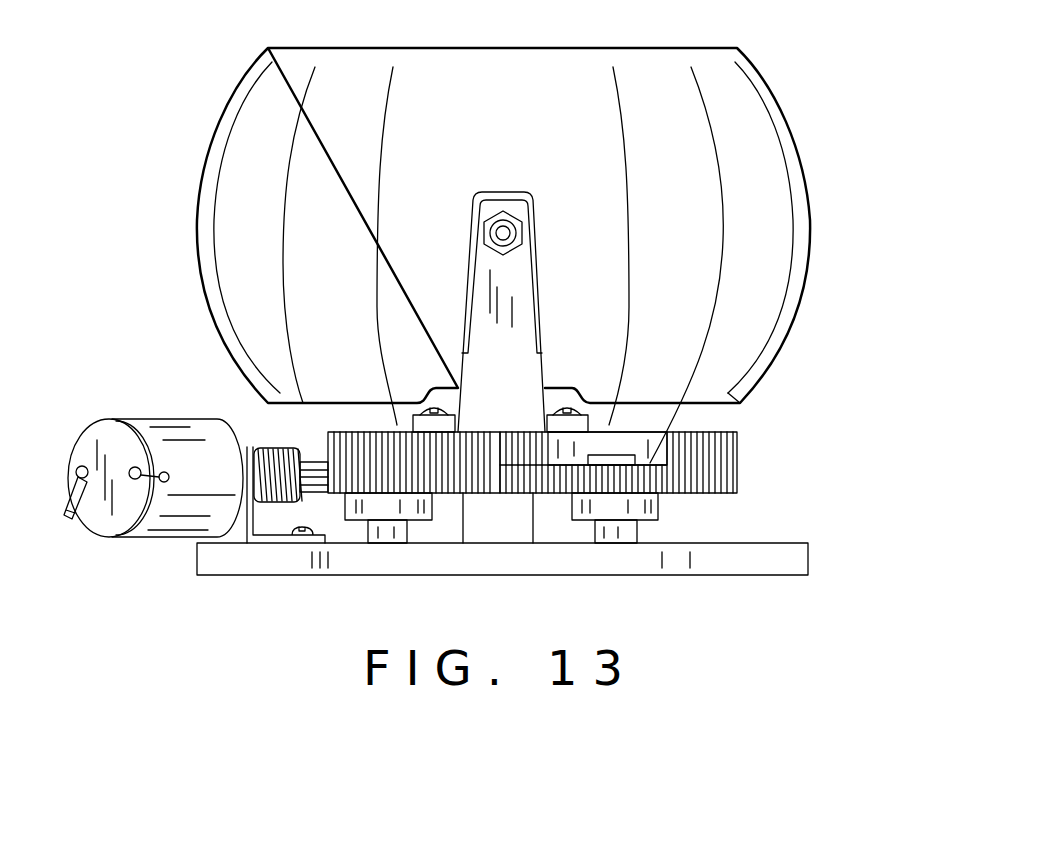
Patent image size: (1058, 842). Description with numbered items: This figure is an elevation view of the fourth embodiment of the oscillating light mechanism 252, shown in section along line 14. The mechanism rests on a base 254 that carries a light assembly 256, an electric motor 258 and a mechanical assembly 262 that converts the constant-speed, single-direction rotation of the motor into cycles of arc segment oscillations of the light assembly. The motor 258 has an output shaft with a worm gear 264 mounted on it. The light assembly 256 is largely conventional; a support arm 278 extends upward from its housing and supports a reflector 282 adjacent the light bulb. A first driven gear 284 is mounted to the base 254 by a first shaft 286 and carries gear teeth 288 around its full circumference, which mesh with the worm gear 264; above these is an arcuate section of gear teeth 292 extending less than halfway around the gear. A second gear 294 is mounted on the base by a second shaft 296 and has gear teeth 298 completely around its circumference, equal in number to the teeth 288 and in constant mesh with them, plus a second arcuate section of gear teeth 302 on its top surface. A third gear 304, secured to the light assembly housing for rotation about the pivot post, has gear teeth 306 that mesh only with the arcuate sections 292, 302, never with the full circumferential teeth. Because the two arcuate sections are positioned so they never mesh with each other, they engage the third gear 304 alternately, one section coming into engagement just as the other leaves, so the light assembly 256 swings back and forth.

The section line 14- 14 is at (496, 350).
The dome assembly 252 is at (790, 60).
The base 254 is at (773, 542).
The light assembly 256 is at (835, 271).
The electric motor 258 is at (193, 442).
The mechanical assembly 262 is at (762, 446).
The worm gear 264 is at (262, 443).
The support arm 278 is at (493, 275).
The reflector 282 is at (750, 150).
The first driven gear 284 is at (307, 458).
The first shaft 286 is at (400, 527).
The gear teeth 288 is at (322, 496).
The arcuate section of gear teeth 292 is at (347, 437).
The second gear 294 is at (728, 393).
The second shaft 296 is at (617, 535).
The gear teeth 298 is at (627, 495).
The arcuate section of gear teeth 302 is at (733, 433).
The third gear 304 is at (360, 437).
The gear teeth 306 is at (612, 422).